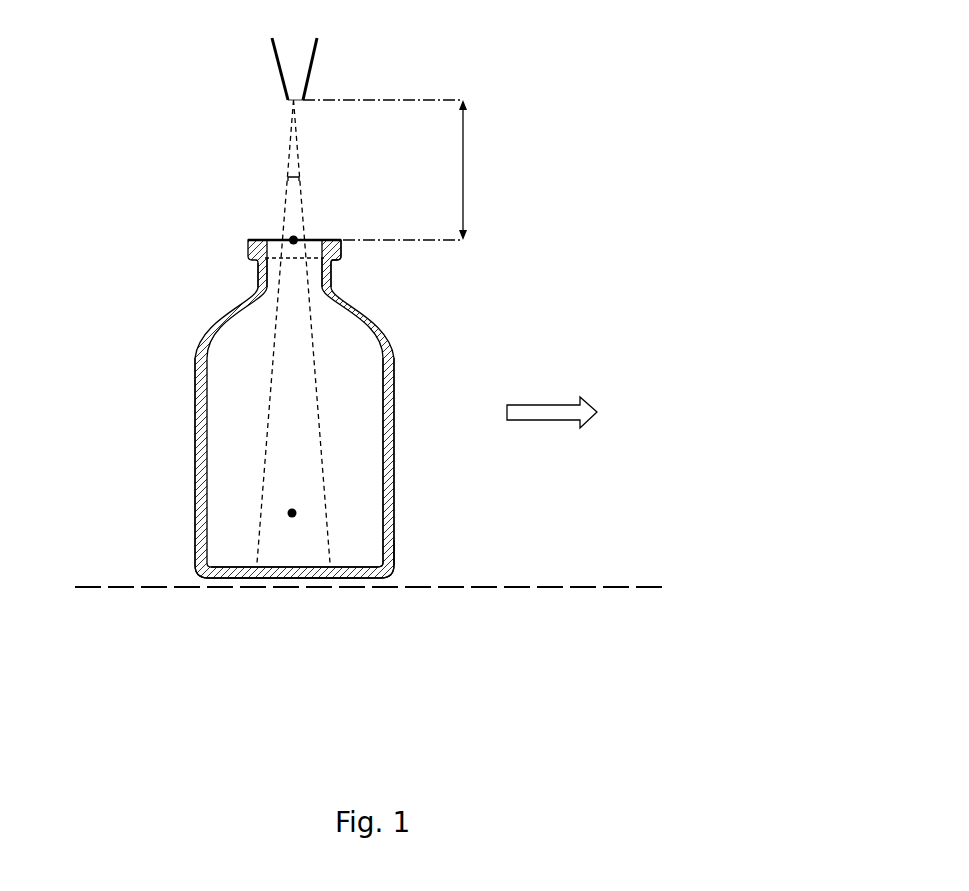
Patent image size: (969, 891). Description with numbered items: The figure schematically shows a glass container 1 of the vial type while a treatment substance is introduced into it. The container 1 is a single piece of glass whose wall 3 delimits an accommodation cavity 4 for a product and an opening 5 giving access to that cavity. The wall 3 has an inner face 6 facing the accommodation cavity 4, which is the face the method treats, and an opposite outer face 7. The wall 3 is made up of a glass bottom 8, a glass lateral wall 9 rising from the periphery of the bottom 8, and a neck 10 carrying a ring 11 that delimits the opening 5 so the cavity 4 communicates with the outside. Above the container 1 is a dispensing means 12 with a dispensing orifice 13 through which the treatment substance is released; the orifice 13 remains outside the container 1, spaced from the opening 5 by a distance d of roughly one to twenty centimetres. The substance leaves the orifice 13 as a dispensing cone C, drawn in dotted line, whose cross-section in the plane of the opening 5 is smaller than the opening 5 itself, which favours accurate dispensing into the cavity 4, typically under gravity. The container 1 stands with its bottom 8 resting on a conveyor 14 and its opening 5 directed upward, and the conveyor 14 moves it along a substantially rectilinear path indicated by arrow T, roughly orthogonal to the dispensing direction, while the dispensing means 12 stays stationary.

The glass container 1 is at (196, 255).
The wall 3 is at (398, 368).
The accommodation cavity 4 is at (288, 513).
The opening 5 is at (289, 240).
The inner face 6 is at (387, 537).
The outer face 7 is at (392, 442).
The bottom 8 is at (287, 589).
The lateral wall 9 is at (193, 448).
The neck 10 is at (257, 277).
The ring 11 is at (343, 252).
The dispensing means 12 is at (317, 47).
The dispensing orifice 13 is at (280, 98).
The conveyor 14 is at (418, 590).
The dispensing cone C is at (278, 188).
The distance d is at (402, 170).
The arrow indicating path of motion T is at (552, 392).